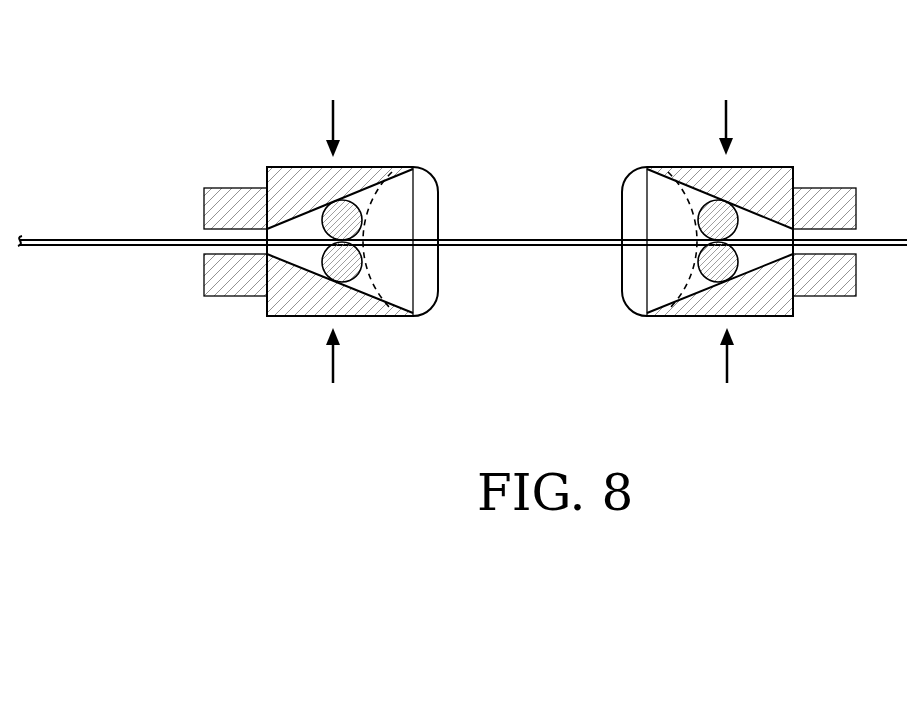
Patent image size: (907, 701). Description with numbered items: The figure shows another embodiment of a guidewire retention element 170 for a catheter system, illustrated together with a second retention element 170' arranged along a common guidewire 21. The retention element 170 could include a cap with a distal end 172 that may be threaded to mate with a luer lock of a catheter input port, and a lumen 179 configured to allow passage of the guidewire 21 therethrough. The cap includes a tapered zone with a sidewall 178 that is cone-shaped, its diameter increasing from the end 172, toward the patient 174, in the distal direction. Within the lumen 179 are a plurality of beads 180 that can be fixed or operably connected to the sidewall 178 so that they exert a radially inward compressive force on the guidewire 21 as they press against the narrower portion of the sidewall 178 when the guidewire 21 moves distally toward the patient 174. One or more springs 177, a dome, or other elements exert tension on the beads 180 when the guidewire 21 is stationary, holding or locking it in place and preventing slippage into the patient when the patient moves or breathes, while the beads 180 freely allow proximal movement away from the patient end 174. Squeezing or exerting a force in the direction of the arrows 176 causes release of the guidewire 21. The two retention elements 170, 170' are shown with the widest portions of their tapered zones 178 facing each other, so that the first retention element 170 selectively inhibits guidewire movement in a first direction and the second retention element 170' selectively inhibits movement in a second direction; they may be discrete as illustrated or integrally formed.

The guidewire retention element 170 is at (359, 215).
The second retention element 170' is at (756, 238).
The distal end 172 is at (233, 188).
The patient end 174 is at (42, 247).
The arrows 176 is at (332, 120).
The springs 177 is at (375, 198).
The sidewall 178 is at (297, 303).
The lumen 179 is at (462, 187).
The beads 180 is at (345, 272).
The guidewire 21 is at (546, 247).